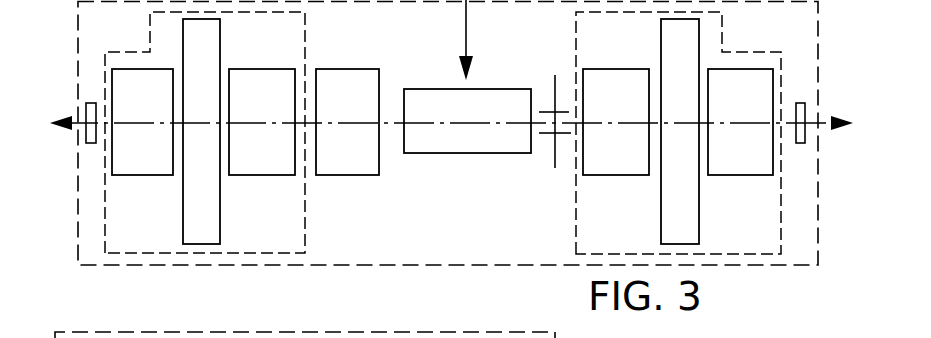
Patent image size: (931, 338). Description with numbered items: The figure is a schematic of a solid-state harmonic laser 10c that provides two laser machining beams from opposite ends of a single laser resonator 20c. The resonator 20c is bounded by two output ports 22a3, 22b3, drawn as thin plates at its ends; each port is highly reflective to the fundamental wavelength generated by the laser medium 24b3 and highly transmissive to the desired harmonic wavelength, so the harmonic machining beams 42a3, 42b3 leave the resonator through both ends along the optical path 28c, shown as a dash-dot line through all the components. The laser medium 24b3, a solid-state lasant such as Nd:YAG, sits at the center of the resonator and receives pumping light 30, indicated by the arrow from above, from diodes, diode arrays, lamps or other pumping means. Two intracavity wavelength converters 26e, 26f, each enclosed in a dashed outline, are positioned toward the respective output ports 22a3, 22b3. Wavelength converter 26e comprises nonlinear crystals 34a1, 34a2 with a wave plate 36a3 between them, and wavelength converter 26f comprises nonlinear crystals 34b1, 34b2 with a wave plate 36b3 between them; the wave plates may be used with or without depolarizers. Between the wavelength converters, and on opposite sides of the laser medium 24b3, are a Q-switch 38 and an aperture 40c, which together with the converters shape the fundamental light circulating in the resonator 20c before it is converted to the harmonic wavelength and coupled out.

The laser 10c is at (728, 282).
The laser resonator 20c is at (783, 265).
The output port 22a3 is at (88, 103).
The output port 22b3 is at (802, 102).
The laser medium 24b3 is at (463, 153).
The wavelength converter 26e is at (305, 47).
The wavelength converter 26f is at (575, 60).
The resonator optical axis 28c is at (385, 124).
The pumping light 30 is at (464, 27).
The nonlinear crystal 34a1 is at (258, 175).
The nonlinear crystal 34a2 is at (137, 175).
The nonlinear crystal 34b1 is at (607, 175).
The nonlinear crystal 34b2 is at (731, 175).
The wave plate 36a3 is at (221, 47).
The wave plate 36b3 is at (661, 50).
The Q-switch 38 is at (348, 175).
The aperture 40c is at (553, 168).
The output beam 42a3 is at (72, 122).
The output beam 42b3 is at (825, 118).